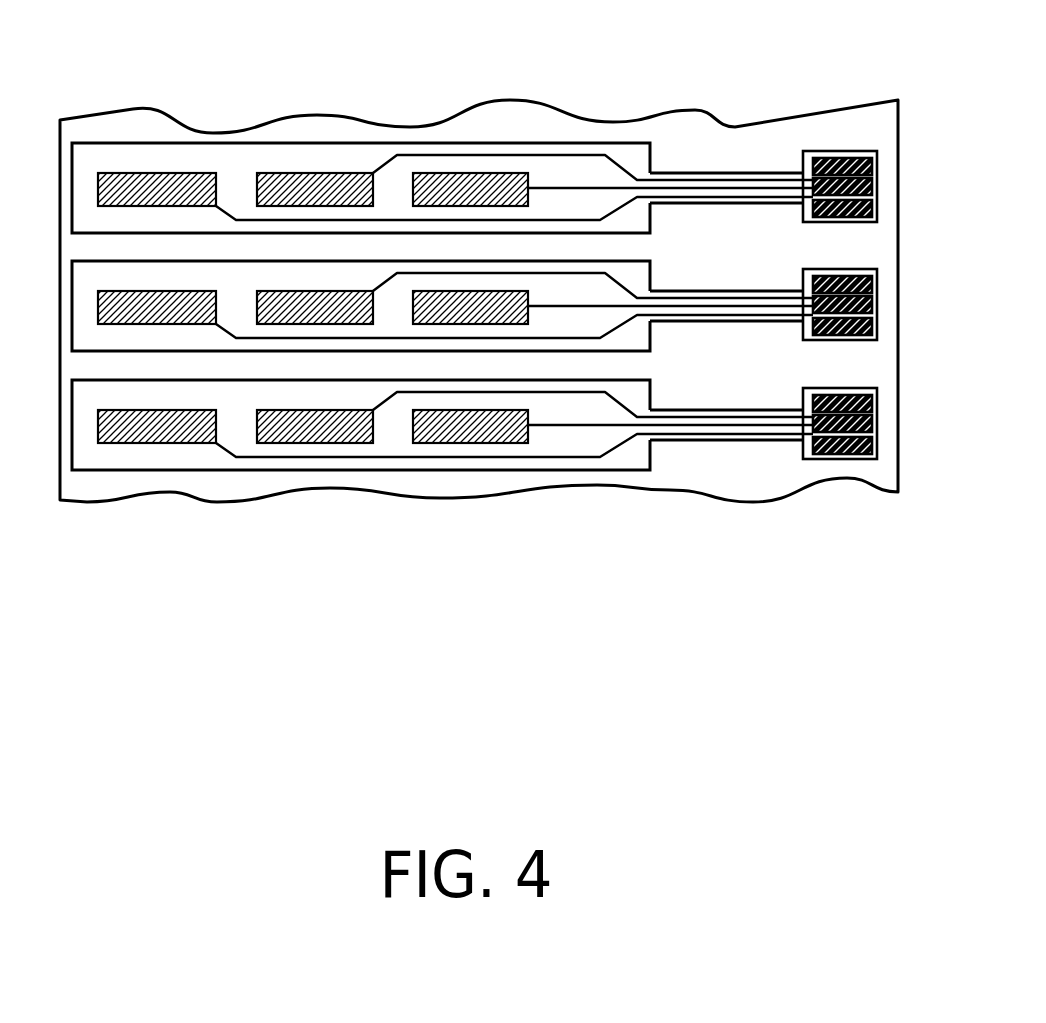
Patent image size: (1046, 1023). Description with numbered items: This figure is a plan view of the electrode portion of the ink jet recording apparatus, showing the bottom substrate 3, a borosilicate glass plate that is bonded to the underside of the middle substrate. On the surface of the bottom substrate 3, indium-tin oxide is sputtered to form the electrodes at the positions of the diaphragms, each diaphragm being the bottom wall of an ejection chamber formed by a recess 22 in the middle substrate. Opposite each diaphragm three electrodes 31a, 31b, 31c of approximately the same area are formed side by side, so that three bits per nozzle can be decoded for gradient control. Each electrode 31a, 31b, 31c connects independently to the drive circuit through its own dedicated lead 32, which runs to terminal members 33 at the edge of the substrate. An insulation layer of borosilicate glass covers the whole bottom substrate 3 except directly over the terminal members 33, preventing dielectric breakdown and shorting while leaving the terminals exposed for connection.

The bottom substrate 3 is at (683, 145).
The recess 22 is at (103, 467).
The electrode 31a is at (177, 444).
The electrode 31b is at (343, 443).
The electrode 31c is at (473, 442).
The lead 32 is at (558, 465).
The terminal member 33 is at (833, 430).